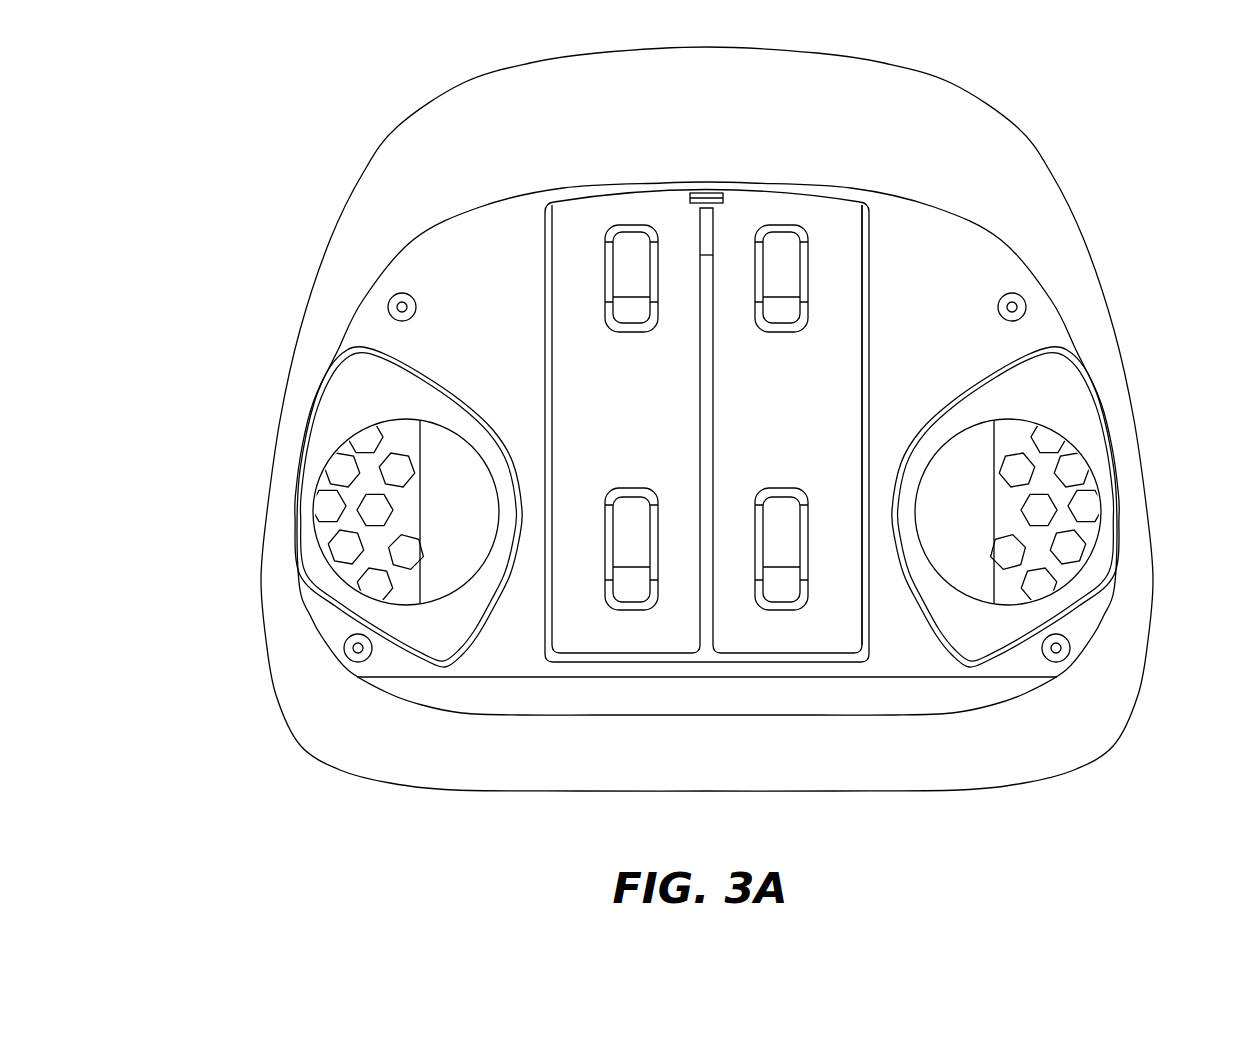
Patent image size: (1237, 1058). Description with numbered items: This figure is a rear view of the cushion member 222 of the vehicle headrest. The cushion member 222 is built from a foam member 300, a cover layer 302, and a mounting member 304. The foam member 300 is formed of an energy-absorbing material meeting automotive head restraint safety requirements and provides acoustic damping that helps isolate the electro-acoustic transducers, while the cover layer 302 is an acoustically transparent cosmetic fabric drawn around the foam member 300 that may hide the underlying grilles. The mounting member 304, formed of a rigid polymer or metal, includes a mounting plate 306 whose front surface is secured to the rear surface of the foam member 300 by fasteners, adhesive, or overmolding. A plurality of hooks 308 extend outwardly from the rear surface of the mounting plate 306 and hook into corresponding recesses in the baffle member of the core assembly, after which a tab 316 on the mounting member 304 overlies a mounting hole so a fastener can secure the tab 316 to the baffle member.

The cushion member 222 is at (1100, 113).
The foam member 300 is at (348, 404).
The cover layer 302 is at (1072, 652).
The mounting member 304 is at (867, 533).
The mounting plate 306 is at (833, 420).
The hooks 308 is at (605, 276).
The tab 316 is at (707, 191).